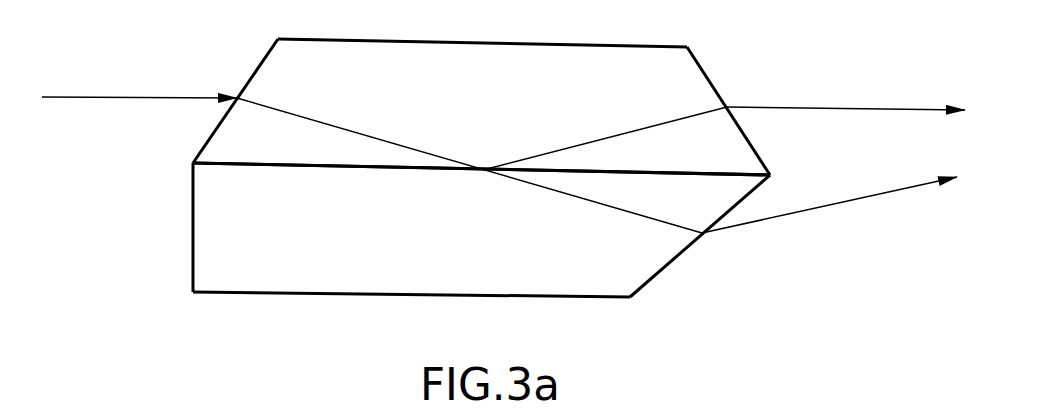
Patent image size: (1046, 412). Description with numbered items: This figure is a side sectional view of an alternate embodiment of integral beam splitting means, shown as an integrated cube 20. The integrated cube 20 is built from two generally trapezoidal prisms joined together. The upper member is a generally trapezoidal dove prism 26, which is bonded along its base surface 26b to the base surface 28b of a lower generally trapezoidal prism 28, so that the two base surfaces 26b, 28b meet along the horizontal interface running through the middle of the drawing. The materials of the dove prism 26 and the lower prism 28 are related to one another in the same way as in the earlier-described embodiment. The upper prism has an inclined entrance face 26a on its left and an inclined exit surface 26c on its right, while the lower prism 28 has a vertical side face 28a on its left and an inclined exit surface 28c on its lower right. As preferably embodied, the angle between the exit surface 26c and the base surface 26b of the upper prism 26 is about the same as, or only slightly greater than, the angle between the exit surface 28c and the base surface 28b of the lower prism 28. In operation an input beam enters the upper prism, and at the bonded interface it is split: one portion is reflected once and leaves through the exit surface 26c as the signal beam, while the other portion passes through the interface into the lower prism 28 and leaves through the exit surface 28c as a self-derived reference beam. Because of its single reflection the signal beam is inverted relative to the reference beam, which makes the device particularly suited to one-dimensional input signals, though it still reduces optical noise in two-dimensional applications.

The integrated cube 20 is at (173, 143).
The dove prism 26 is at (453, 47).
The entrance face of first prism 26a is at (265, 57).
The base surface 26b is at (299, 144).
The exit surface 26c is at (710, 78).
The trapezoidal prism 28 is at (300, 275).
The side face of second prism 28a is at (192, 229).
The base surface 28b is at (300, 168).
The exit surface 28c is at (675, 257).